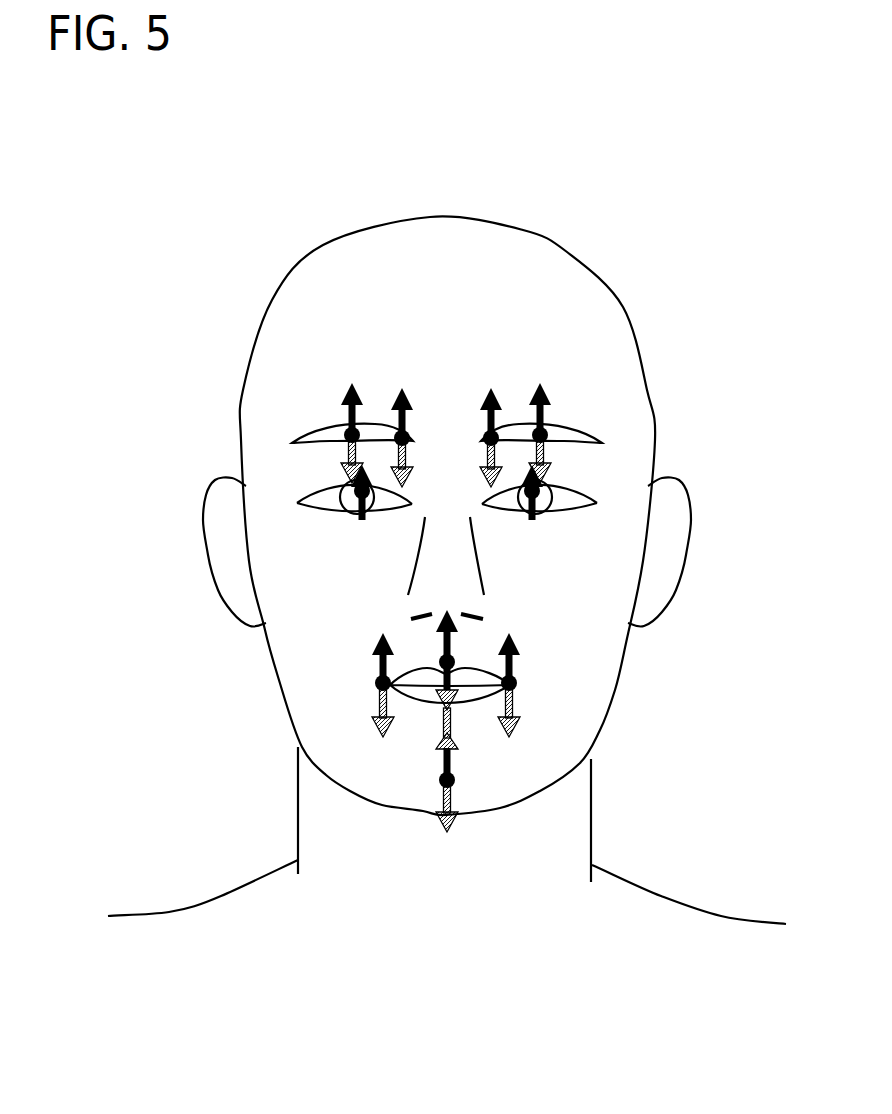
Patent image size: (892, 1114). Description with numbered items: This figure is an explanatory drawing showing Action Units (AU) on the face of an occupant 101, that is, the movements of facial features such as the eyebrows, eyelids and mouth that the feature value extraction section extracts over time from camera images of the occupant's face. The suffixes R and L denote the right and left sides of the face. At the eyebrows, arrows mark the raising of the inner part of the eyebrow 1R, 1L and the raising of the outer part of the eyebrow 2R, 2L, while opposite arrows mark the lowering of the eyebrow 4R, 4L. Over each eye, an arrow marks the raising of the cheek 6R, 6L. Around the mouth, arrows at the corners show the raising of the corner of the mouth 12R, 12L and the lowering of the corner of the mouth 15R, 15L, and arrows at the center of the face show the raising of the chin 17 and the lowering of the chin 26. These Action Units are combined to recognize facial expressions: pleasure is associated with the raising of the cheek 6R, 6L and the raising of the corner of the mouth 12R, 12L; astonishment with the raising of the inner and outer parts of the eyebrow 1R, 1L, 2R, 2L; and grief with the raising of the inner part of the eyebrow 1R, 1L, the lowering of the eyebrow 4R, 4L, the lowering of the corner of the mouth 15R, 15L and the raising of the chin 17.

The occupant 101 is at (565, 246).
The raising inner part of right eyebrow 1R is at (395, 401).
The raising inner part of left eyebrow 1L is at (486, 401).
The raising outer part of right eyebrow 2R is at (347, 398).
The raising outer part of left eyebrow 2L is at (532, 398).
The lowering right eyebrow 4R is at (374, 469).
The lowering left eyebrow 4L is at (519, 469).
The raising right cheek 6R is at (361, 511).
The raising left cheek 6L is at (532, 511).
The raising right corner of mouth 12R is at (383, 648).
The raising left corner of mouth 12L is at (513, 648).
The lowering right corner of mouth 15R is at (386, 728).
The lowering left corner of mouth 15L is at (516, 728).
The raising chin 17 is at (457, 679).
The lowering chin 26 is at (449, 806).